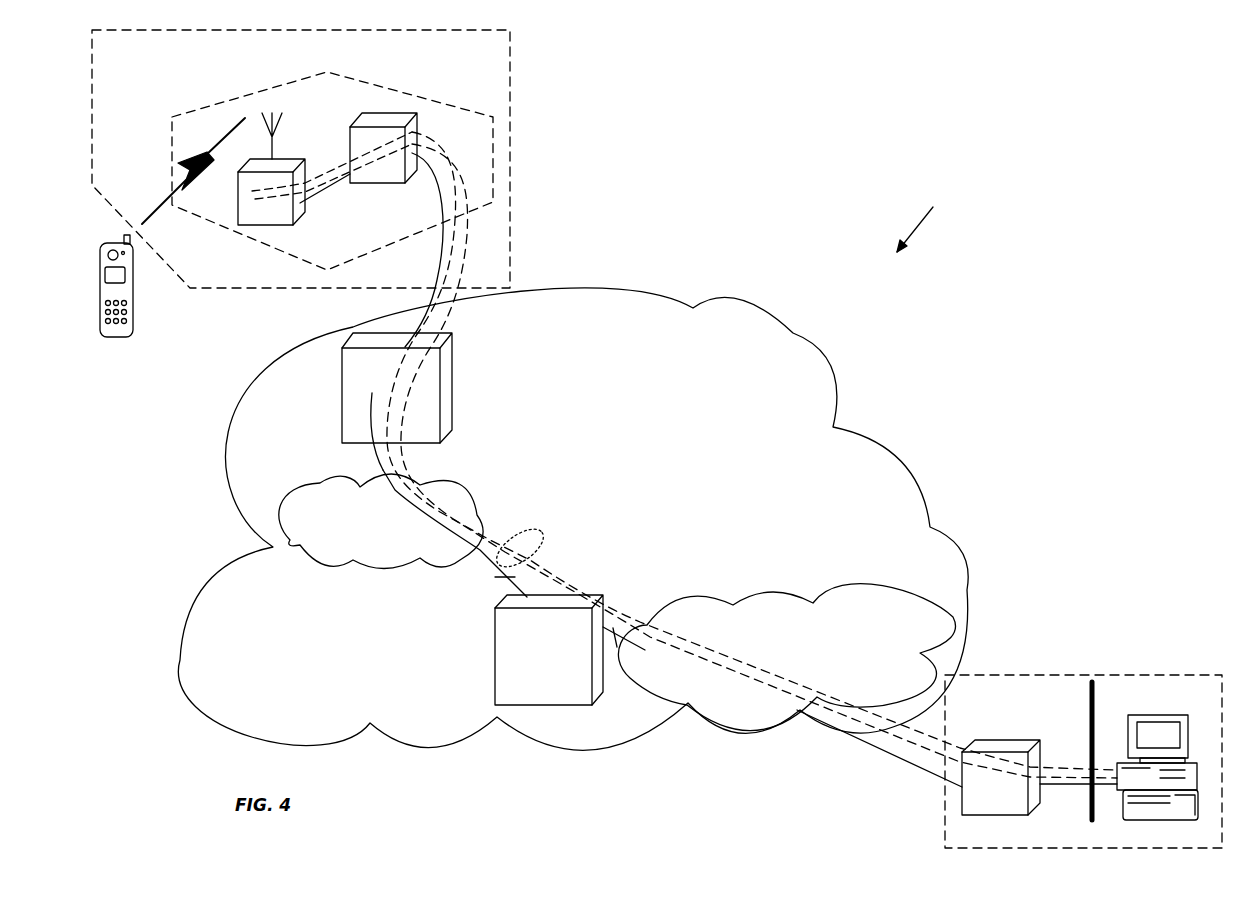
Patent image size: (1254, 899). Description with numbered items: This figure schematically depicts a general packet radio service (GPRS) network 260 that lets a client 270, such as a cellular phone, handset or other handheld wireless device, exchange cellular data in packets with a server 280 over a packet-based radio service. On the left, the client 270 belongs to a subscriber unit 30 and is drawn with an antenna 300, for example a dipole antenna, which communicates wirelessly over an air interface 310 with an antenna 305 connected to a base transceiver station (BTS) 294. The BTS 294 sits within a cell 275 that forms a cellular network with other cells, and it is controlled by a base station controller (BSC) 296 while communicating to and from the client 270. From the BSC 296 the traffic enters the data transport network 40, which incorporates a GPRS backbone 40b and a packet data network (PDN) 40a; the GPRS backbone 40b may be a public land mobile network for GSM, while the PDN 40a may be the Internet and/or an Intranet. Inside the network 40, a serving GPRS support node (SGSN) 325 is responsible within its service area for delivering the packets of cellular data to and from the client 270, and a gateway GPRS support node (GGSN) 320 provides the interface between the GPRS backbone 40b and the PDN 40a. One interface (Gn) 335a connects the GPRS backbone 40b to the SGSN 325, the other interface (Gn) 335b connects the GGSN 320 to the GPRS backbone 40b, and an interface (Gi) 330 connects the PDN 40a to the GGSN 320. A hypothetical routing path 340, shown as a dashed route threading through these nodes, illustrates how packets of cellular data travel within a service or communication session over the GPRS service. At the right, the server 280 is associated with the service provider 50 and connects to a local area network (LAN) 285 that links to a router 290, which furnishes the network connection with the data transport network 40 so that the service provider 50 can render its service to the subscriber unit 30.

The subscriber unit 30 is at (301, 159).
The cell 275 is at (493, 165).
The air interface 310 is at (190, 163).
The antenna 305 is at (272, 113).
The base transceiver station (BTS) 294 is at (267, 227).
The base station controller (BSC) 296 is at (415, 128).
The client 270 is at (135, 320).
The antenna 300 is at (133, 237).
The general packet radio service (GPRS) network 260 is at (936, 221).
The data transport network 40 is at (793, 332).
The packet data network (PDN) 40a is at (786, 657).
The GPRS backbone 40b is at (381, 521).
The serving GPRS support node (SGSN) 325 is at (342, 397).
The gateway GPRS support node (GGSN) 320 is at (547, 707).
The interface (Gn) 335a is at (383, 472).
The interface (Gn) 335b is at (507, 583).
The interface (Gi) 330 is at (622, 640).
The hypothetical routing path 340 is at (540, 528).
The service provider 50 is at (1083, 761).
The router 290 is at (1017, 748).
The local area network (LAN) 285 is at (1095, 680).
The server 280 is at (1138, 715).